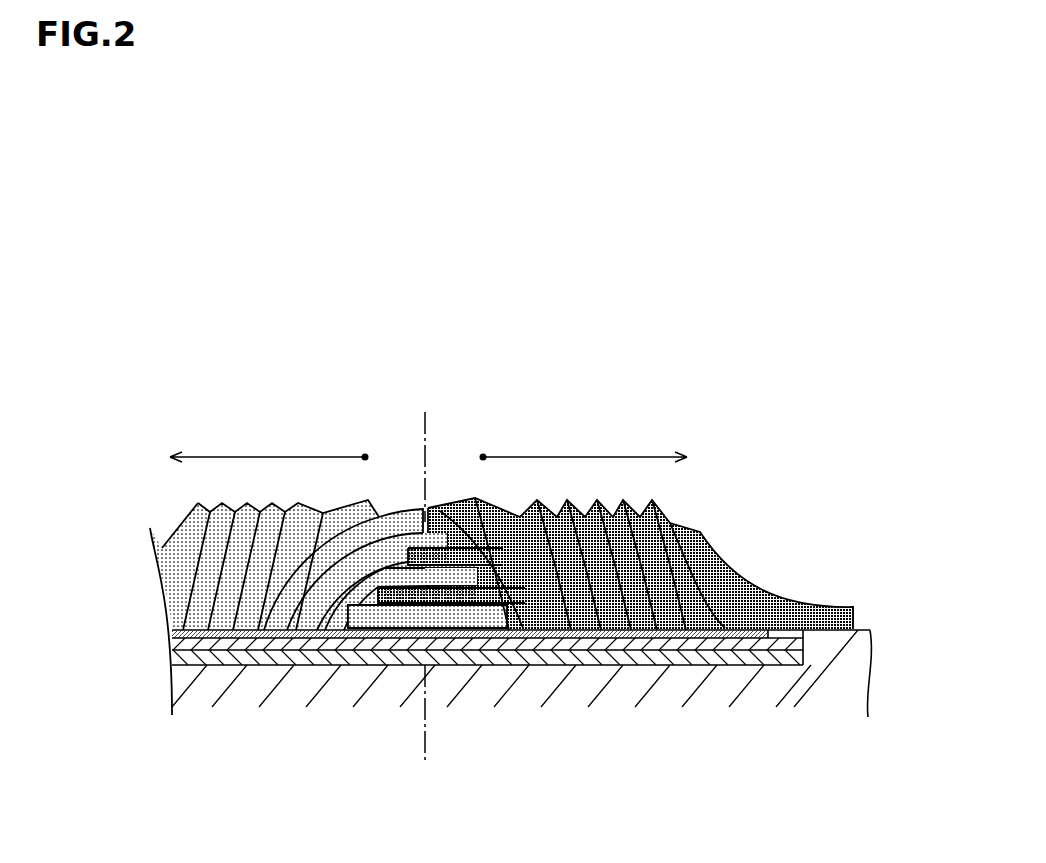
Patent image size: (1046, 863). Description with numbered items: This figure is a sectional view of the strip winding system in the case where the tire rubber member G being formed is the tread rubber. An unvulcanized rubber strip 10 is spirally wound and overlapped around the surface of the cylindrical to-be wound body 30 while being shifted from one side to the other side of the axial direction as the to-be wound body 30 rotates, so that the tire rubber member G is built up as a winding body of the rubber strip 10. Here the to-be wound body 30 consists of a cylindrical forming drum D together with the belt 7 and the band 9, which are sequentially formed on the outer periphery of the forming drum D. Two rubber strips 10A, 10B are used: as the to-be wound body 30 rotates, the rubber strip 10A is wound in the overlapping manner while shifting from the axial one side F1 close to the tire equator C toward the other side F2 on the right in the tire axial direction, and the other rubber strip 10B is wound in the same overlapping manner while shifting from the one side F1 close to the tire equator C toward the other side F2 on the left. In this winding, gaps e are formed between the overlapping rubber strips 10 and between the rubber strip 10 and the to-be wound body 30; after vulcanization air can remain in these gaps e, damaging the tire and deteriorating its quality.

The rubber strip 10 is at (480, 605).
The rubber strip 10A is at (745, 590).
The rubber strip 10B is at (170, 557).
The tire rubber member G is at (728, 506).
The to-be wound body 30 is at (467, 667).
The band 9 is at (173, 634).
The belt 7 is at (176, 652).
The forming drum D is at (115, 618).
The gaps e is at (372, 598).
The tire equator C is at (425, 762).
The axial one side F1 is at (424, 458).
The other side F2 is at (430, 458).